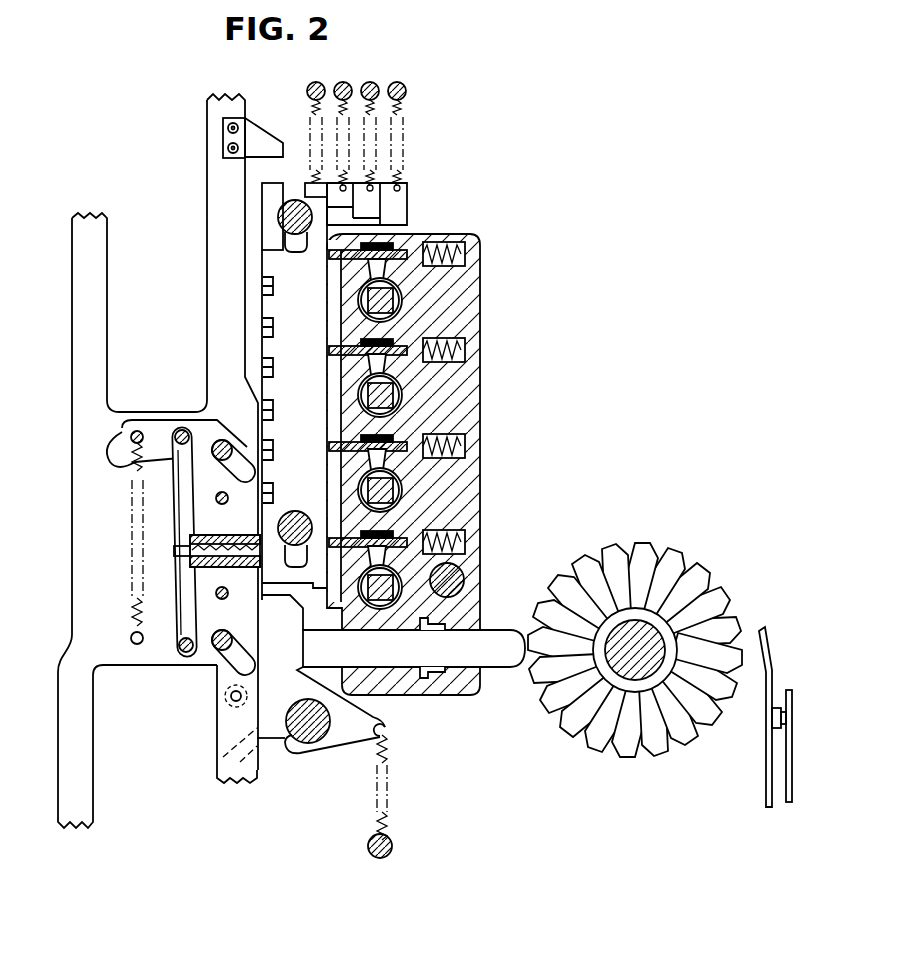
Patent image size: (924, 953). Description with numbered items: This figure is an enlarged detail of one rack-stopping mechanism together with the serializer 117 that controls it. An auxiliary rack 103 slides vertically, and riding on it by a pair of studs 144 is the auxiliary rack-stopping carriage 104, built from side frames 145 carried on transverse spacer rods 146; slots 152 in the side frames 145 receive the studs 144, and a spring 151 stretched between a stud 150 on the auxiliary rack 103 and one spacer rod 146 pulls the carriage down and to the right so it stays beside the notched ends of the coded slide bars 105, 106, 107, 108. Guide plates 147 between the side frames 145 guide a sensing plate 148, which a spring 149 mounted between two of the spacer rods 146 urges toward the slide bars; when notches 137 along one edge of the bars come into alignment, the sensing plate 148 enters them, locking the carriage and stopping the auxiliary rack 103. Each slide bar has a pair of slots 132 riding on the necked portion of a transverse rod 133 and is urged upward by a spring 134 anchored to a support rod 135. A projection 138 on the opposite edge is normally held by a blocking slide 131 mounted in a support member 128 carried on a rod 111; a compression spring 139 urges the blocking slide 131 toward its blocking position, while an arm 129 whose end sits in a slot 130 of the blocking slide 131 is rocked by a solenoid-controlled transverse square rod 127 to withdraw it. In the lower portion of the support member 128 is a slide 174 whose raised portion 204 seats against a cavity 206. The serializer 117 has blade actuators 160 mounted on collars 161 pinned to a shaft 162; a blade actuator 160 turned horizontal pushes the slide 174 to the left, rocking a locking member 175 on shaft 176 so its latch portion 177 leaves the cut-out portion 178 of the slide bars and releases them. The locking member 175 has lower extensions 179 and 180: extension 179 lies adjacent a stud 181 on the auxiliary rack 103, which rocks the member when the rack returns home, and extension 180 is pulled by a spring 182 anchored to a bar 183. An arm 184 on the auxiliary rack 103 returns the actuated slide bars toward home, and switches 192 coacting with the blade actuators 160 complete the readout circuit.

The auxiliary rack 103 is at (93, 735).
The auxiliary rack-stopping carriage 104 is at (163, 660).
The coded slide bar 105 is at (238, 200).
The coded slide bar 106 is at (312, 186).
The coded slide bar 107 is at (395, 219).
The coded slide bar 108 is at (402, 188).
The rod 111 is at (460, 572).
The serializer 117 is at (613, 533).
The transverse square rod 127 is at (368, 293).
The support member 128 is at (482, 414).
The arm 129 is at (368, 262).
The slot 130 is at (440, 342).
The blocking slide 131 is at (440, 360).
The slots 132 is at (288, 242).
The transverse rod 133 is at (282, 222).
The spring 134 is at (312, 106).
The support rod 135 is at (318, 83).
The notches 137 is at (270, 431).
The projection 138 is at (330, 311).
The compression spring 139 is at (465, 252).
The studs 144 is at (222, 440).
The side frames 145 is at (122, 448).
The transverse spacer rods 146 is at (131, 437).
The guide plates 147 is at (240, 535).
The sensing plate 148 is at (188, 548).
The spring 149 is at (180, 520).
The stud 150 is at (134, 634).
The spring 151 is at (134, 600).
The slots 152 is at (222, 485).
The blade actuators 160 is at (632, 542).
The collar 161 is at (678, 655).
The shaft 162 is at (700, 579).
The slide 174 is at (495, 630).
The locking member 175 is at (316, 754).
The shaft 176 is at (266, 755).
The latch portion 177 is at (304, 657).
The cut-out portion 178 is at (330, 630).
The lower extension 179 is at (238, 786).
The lower extension 180 is at (392, 727).
The stud 181 is at (228, 702).
The spring 182 is at (386, 822).
The bar 183 is at (370, 842).
The arm 184 is at (248, 124).
The switches 192 is at (768, 724).
The raised portion 204 is at (445, 626).
The cavity 206 is at (445, 620).